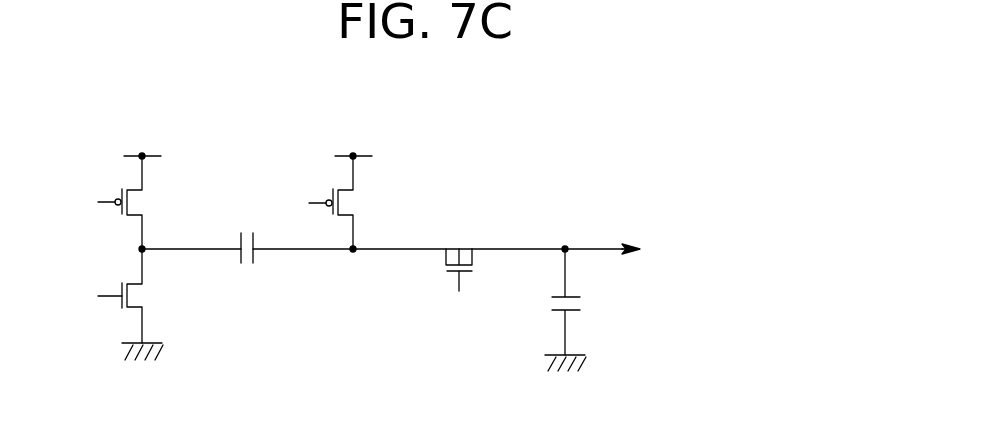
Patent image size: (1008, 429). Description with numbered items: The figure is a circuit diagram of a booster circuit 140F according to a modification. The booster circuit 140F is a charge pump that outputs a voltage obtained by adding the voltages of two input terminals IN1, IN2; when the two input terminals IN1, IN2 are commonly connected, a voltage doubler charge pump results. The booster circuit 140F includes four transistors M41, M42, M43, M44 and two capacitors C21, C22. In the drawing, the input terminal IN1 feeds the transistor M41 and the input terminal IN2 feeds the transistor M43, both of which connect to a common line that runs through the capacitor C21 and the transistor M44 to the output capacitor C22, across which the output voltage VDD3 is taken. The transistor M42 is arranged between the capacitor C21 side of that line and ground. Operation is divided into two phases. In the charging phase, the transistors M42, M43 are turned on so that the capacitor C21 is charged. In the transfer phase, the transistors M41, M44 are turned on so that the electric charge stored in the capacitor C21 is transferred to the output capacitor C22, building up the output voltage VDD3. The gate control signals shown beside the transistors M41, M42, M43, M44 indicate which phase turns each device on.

The booster circuit 140F is at (675, 140).
The transistor M41 is at (143, 208).
The transistor M42 is at (143, 291).
The transistor M43 is at (354, 208).
The transistor M44 is at (443, 265).
The capacitor C21 is at (243, 265).
The output capacitor C22 is at (552, 302).
The input terminal IN1 is at (142, 155).
The input terminal IN2 is at (354, 155).
The output voltage VDD3 is at (673, 253).